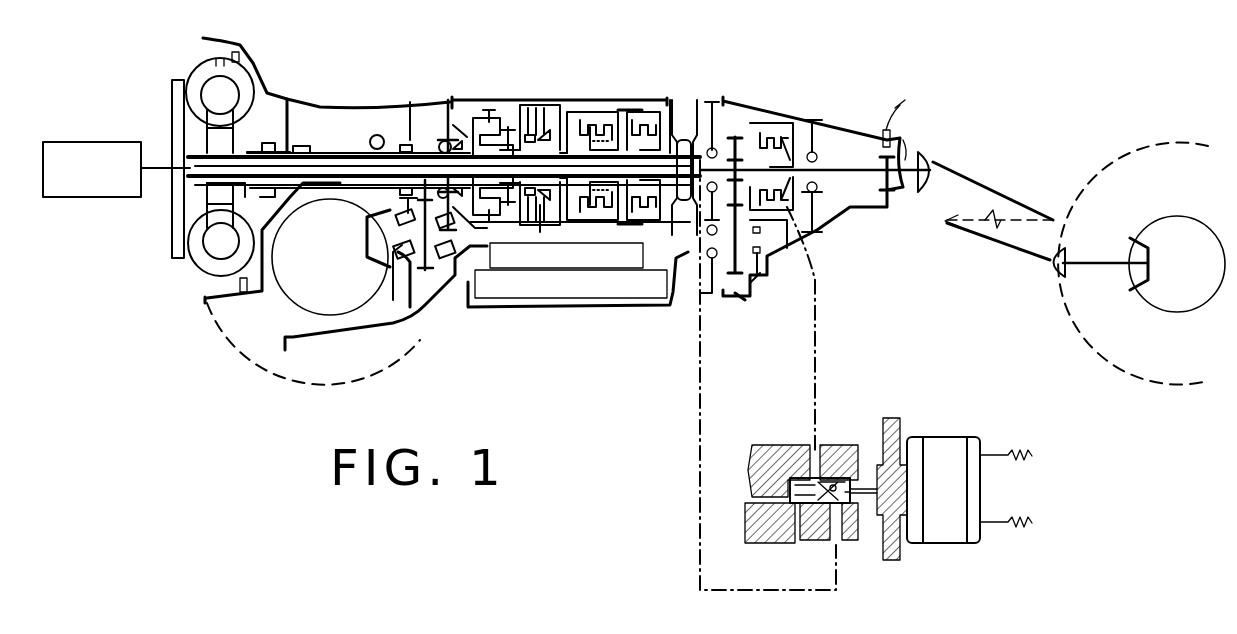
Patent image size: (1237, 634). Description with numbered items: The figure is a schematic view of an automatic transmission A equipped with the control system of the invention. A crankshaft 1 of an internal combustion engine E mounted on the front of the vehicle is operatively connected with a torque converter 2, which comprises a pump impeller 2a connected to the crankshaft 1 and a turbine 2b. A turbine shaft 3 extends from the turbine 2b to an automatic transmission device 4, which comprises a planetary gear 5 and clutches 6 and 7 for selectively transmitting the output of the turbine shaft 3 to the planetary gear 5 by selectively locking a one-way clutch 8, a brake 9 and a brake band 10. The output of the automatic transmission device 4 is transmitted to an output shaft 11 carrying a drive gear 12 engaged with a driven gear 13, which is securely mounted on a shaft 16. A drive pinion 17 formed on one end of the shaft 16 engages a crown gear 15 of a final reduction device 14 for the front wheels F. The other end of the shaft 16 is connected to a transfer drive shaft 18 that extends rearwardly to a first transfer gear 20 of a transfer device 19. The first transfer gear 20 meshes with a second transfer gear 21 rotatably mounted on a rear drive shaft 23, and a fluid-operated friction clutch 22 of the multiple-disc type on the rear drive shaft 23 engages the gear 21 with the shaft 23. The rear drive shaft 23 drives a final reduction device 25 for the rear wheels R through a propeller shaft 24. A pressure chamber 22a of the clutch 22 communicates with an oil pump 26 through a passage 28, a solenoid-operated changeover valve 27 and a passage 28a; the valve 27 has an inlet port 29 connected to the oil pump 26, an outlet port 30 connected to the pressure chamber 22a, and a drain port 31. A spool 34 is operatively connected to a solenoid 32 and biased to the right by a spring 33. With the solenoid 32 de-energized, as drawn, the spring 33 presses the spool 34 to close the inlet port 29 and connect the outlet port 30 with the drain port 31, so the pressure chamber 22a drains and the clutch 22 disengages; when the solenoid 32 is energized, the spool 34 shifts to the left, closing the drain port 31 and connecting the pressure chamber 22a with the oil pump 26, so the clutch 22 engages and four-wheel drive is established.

The crankshaft 1 is at (164, 172).
The torque converter 2 is at (258, 97).
The pump impeller 2a is at (240, 82).
The turbine 2b is at (200, 80).
The turbine shaft 3 is at (318, 152).
The automatic transmission device 4 is at (576, 96).
The planetary gear 5 is at (502, 123).
The clutch 6 is at (610, 120).
The clutch 7 is at (645, 120).
The one-way clutch 8 is at (537, 218).
The brake 9 is at (537, 110).
The brake band 10 is at (635, 108).
The output shaft 11 is at (417, 140).
The drive gear 12 is at (430, 150).
The driven gear 13 is at (425, 272).
The final reduction device 14 is at (365, 304).
The crown gear 15 is at (340, 314).
The shaft 16 is at (393, 280).
The drive pinion 17 is at (367, 247).
The transfer drive shaft 18 is at (598, 240).
The transfer device 19 is at (778, 106).
The first transfer gear 20 is at (737, 293).
The second transfer gear 21 is at (740, 127).
The fluid-operated friction clutch 22 is at (792, 122).
The pressure chamber 22a is at (787, 215).
The rear drive shaft 23 is at (833, 170).
The propeller shaft 24 is at (1035, 213).
The final reduction device 25 is at (1165, 311).
The oil pump 26 is at (692, 127).
The solenoid-operated changeover valve 27 is at (780, 445).
The passage 28 is at (818, 382).
The passage 28a is at (702, 374).
The inlet port 29 is at (838, 540).
The outlet port 30 is at (818, 443).
The drain port 31 is at (795, 544).
The solenoid 32 is at (962, 437).
The spring 33 is at (787, 497).
The spool 34 is at (860, 445).
The automatic transmission A is at (473, 82).
The internal combustion engine E is at (99, 198).
The front wheels F is at (245, 352).
The rear wheels R is at (1092, 350).